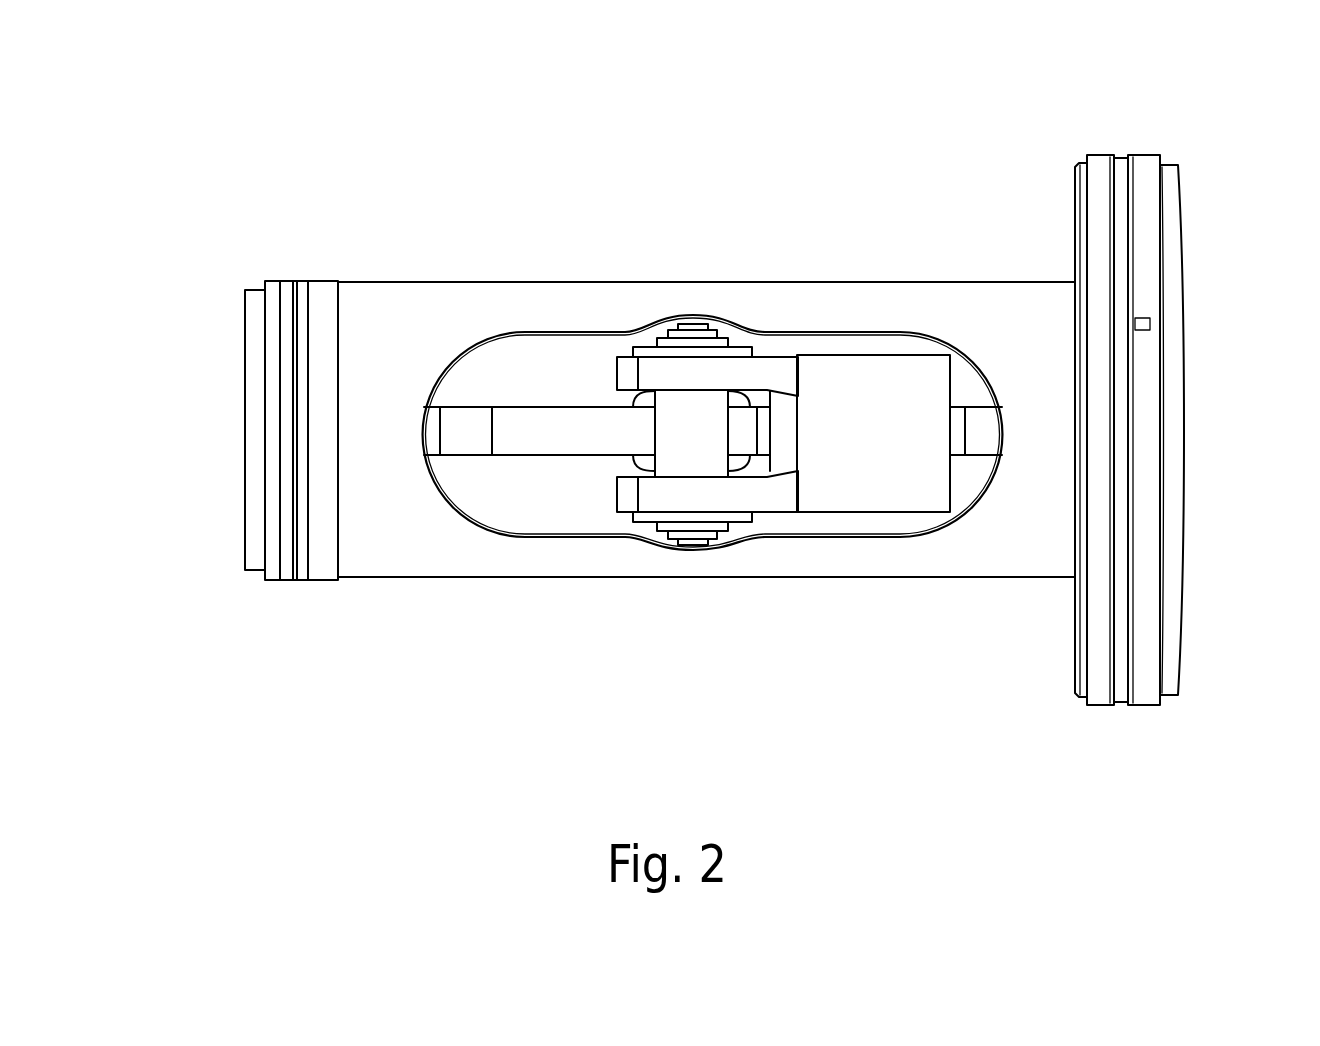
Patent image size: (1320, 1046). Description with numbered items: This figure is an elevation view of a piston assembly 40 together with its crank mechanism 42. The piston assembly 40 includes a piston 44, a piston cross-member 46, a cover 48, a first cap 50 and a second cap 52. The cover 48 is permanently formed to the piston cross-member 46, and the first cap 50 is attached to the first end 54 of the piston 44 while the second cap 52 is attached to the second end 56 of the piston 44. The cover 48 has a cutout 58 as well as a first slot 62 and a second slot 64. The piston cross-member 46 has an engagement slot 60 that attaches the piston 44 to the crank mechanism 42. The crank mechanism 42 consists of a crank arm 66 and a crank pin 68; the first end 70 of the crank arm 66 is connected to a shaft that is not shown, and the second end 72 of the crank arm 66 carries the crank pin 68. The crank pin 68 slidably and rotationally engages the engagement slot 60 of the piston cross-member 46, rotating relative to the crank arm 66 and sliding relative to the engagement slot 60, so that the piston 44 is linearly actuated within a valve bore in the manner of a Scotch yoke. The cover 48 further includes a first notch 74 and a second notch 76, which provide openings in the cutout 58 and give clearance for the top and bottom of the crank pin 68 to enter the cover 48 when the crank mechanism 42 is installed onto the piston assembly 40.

The piston assembly 40 is at (450, 188).
The crank mechanism 42 is at (773, 514).
The piston 44 is at (648, 158).
The piston cross-member 46 is at (517, 455).
The cover 48 is at (882, 282).
The first cap 50 is at (245, 415).
The second cap 52 is at (1187, 365).
The first end 54 is at (336, 201).
The second end 56 is at (1018, 116).
The cutout 58 is at (418, 476).
The engagement slot 60 is at (650, 421).
The first slot 62 is at (632, 402).
The second slot 64 is at (633, 465).
The crank arm 66 is at (813, 517).
The crank pin 68 is at (728, 428).
The first end 70 is at (883, 517).
The second end 72 is at (663, 542).
The first notch 74 is at (690, 313).
The second notch 76 is at (737, 547).